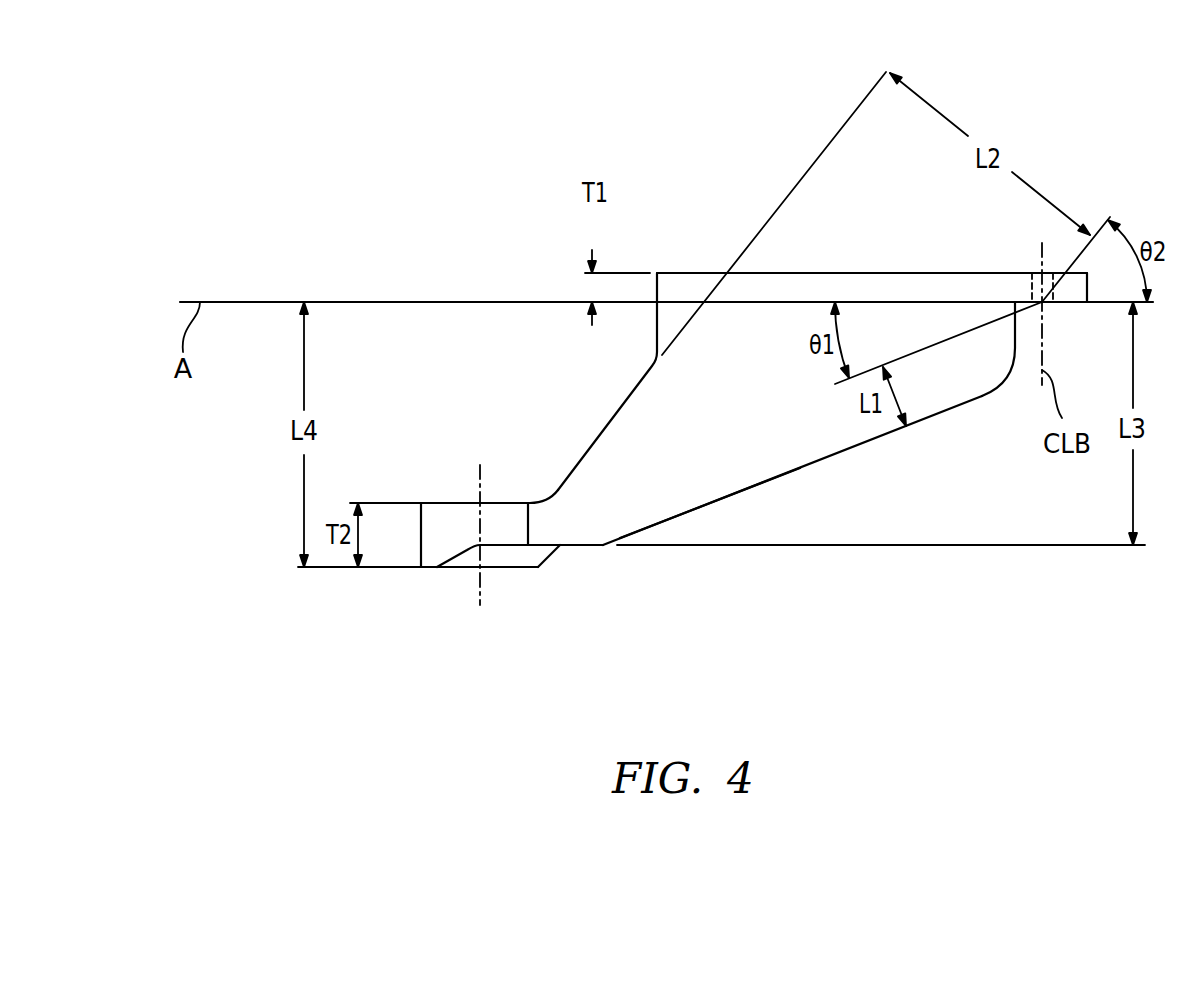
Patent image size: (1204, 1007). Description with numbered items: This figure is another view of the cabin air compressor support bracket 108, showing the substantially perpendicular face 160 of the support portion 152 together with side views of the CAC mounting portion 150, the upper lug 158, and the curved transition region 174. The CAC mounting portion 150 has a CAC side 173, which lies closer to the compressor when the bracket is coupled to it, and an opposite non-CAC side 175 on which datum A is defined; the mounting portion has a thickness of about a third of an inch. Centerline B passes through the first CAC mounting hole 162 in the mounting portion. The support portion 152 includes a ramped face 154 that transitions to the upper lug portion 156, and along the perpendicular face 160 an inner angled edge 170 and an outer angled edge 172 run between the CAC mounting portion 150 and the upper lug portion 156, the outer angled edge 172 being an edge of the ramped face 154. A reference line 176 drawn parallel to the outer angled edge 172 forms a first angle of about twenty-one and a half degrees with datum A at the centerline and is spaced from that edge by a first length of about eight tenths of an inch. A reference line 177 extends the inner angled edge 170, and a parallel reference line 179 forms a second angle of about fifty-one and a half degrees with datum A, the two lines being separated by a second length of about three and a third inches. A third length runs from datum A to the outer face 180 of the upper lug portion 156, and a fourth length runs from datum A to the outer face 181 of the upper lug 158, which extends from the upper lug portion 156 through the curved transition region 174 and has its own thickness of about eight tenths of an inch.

The first CAC support bracket 108 is at (866, 664).
The CAC mounting portion 150 is at (693, 280).
The support portion 152 is at (622, 530).
The ramped face 154 is at (660, 510).
The upper lug portion 156 is at (593, 545).
The upper lug 158 is at (430, 558).
The substantially perpendicular face 160 is at (813, 438).
The first CAC mounting hole 162 is at (1035, 270).
The inner angled edge 170 is at (582, 455).
The outer angled edge 172 is at (747, 488).
The CAC side 173 is at (628, 273).
The curved transition region 174 is at (493, 562).
The non-CAC side 175 is at (622, 302).
The reference line 176 is at (960, 335).
The reference line 177 is at (835, 137).
The reference line 179 is at (1100, 225).
The outer face 180 is at (568, 552).
The outer face 181 is at (435, 568).